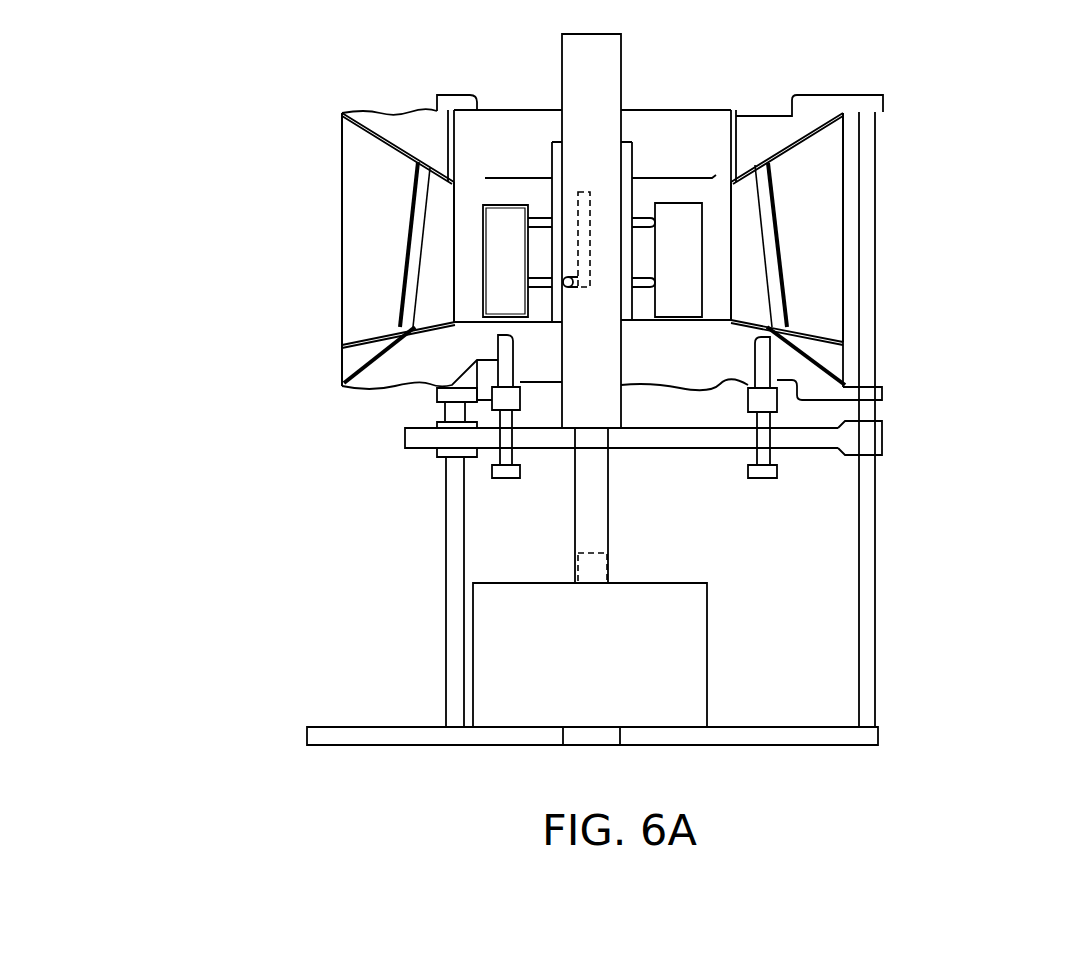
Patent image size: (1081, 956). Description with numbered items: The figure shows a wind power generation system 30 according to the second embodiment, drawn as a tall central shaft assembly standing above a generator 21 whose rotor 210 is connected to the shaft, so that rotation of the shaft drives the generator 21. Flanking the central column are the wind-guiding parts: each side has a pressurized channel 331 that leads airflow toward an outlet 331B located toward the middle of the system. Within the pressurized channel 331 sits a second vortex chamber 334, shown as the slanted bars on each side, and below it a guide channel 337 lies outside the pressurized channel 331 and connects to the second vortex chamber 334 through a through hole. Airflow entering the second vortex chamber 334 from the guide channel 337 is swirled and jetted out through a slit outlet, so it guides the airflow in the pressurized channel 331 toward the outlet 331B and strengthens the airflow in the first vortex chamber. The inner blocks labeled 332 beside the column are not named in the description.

The wind power generation system 30 is at (1080, 726).
The pressurized channel 331 is at (365, 197).
The outlet 331B is at (735, 199).
The second vortex chamber 334 is at (406, 272).
The guide channel 337 is at (357, 355).
The inner clamp block 332 is at (468, 218).
The rotor 210 is at (608, 566).
The generator 21 is at (691, 659).